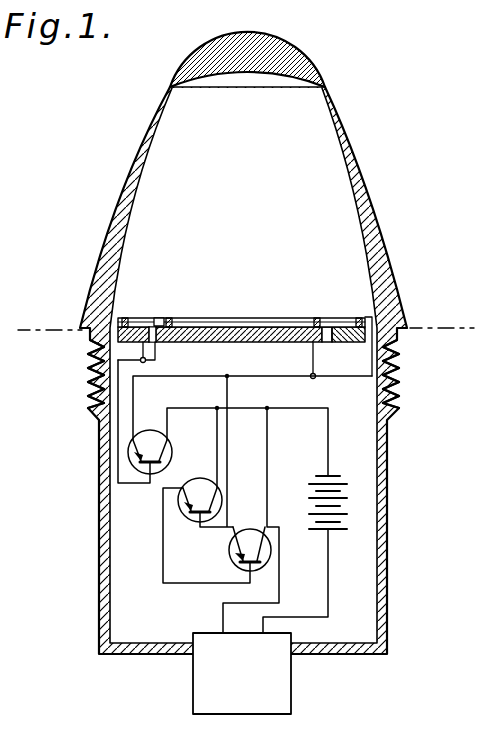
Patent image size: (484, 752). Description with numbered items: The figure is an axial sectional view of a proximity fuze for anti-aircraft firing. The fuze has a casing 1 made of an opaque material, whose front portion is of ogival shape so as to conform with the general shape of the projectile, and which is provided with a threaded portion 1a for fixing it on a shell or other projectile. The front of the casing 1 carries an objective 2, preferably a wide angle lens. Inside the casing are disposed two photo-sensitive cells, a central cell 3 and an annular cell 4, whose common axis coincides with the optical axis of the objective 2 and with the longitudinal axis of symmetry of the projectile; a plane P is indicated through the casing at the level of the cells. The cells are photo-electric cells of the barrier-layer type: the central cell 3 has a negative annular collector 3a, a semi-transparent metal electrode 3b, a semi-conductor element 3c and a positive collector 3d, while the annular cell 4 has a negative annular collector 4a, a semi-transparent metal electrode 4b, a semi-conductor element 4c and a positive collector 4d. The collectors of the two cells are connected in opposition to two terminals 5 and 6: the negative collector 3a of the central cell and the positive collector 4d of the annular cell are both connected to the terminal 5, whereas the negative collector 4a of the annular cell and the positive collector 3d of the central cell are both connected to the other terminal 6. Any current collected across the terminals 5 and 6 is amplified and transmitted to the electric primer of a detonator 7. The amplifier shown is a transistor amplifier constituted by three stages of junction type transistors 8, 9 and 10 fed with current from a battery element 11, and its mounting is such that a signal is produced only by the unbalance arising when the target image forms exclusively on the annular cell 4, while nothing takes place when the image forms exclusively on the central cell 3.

The casing 1 is at (388, 292).
The threaded portion 1a is at (400, 378).
The objective 2 is at (293, 63).
The central photo-sensitive cell 3 is at (226, 343).
The negative annular collector of central cell 3a is at (170, 317).
The semi-transparent metal electrode of central cell 3b is at (233, 320).
The semi-conductor element of central cell 3c is at (316, 318).
The positive collector of central cell 3d is at (277, 333).
The annular photo-sensitive cell 4 is at (118, 338).
The negative annular collector of annular cell 4a is at (125, 318).
The semi-transparent metal electrode of annular cell 4b is at (157, 318).
The semi-conductor element of annular cell 4c is at (351, 322).
The positive collector of annular cell 4d is at (353, 342).
The terminal 5 is at (165, 353).
The terminal 6 is at (314, 379).
The detonator 7 is at (246, 704).
The junction type transistor 8 is at (171, 450).
The junction type transistor 9 is at (193, 518).
The junction type transistor 10 is at (232, 558).
The battery element 11 is at (310, 500).
The plane of separation P is at (246, 320).